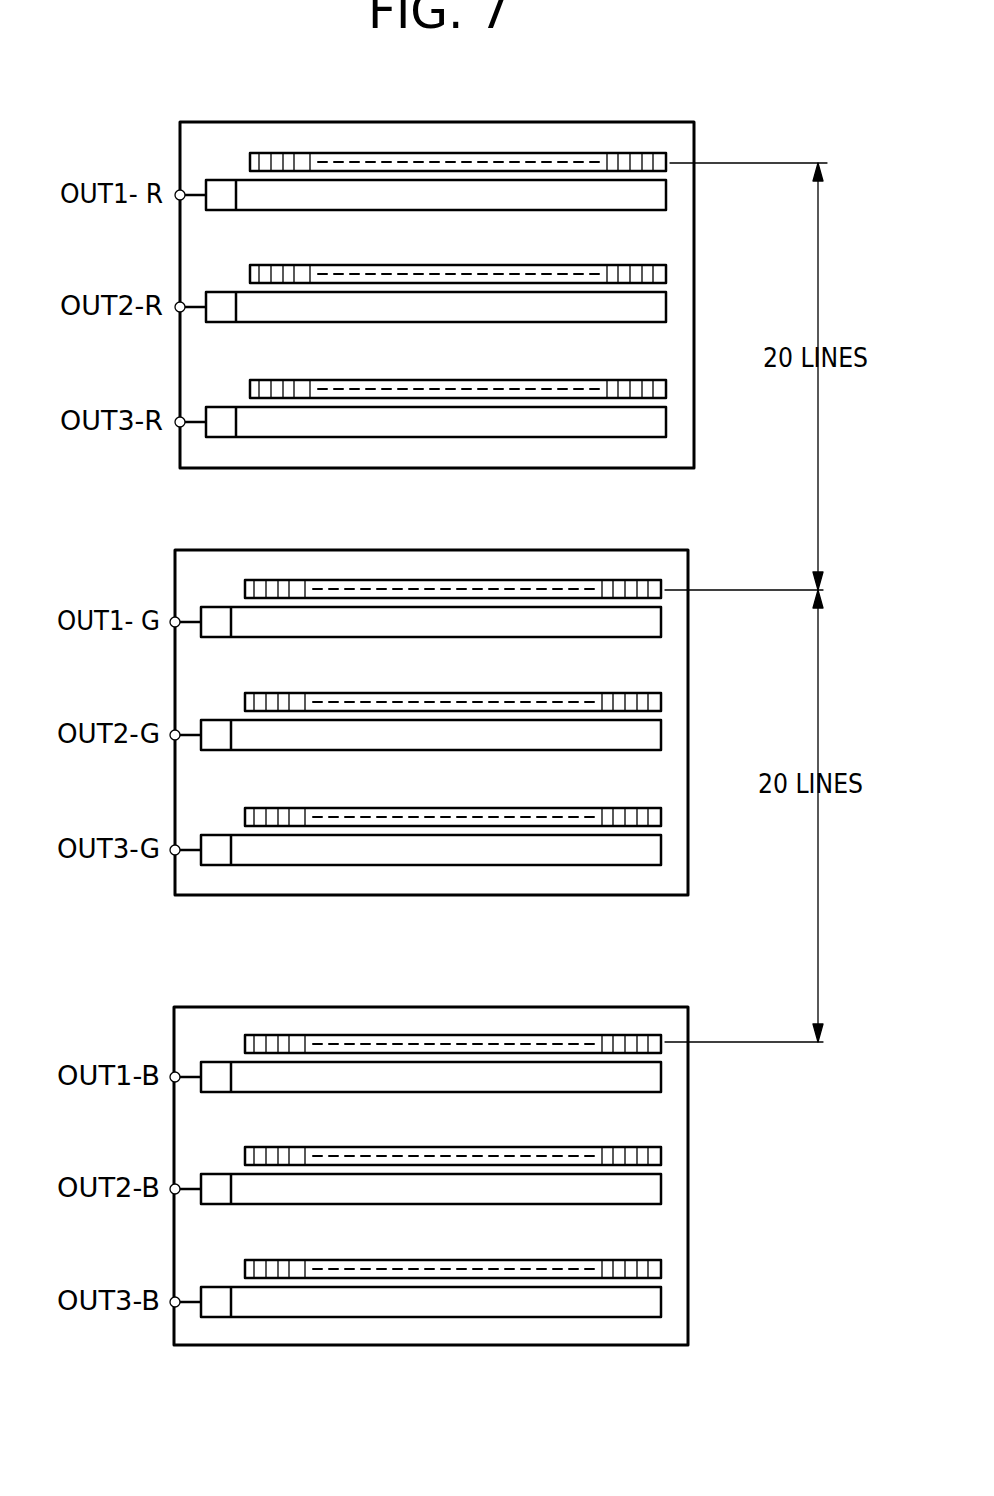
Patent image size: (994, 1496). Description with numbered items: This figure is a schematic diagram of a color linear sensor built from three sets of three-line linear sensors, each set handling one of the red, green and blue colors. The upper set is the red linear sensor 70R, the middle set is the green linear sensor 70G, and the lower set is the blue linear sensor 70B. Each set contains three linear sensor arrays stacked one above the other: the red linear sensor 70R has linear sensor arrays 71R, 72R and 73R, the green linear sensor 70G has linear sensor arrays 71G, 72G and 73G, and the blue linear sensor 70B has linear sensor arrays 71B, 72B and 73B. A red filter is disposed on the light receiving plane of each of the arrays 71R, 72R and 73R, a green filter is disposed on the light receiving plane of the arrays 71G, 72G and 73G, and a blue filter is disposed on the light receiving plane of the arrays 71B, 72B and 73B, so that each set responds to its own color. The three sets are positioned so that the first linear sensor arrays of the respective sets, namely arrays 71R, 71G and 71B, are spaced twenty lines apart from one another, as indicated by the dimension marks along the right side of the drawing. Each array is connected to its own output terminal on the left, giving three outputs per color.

The red linear sensor 70R is at (393, 123).
The linear sensor array 71R is at (653, 153).
The linear sensor array 72R is at (638, 266).
The linear sensor array 73R is at (638, 380).
The green linear sensor 70G is at (392, 551).
The linear sensor array 71G is at (633, 582).
The linear sensor array 72G is at (625, 696).
The linear sensor array 73G is at (620, 809).
The blue linear sensor 70B is at (392, 1007).
The linear sensor array 71B is at (615, 1037).
The linear sensor array 72B is at (612, 1150).
The linear sensor array 73B is at (610, 1263).